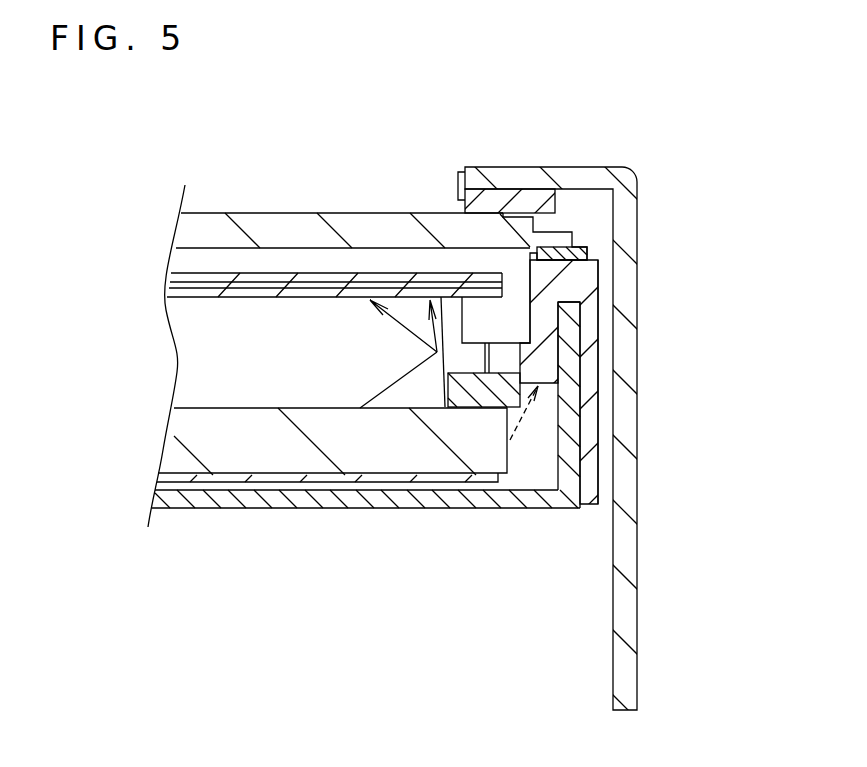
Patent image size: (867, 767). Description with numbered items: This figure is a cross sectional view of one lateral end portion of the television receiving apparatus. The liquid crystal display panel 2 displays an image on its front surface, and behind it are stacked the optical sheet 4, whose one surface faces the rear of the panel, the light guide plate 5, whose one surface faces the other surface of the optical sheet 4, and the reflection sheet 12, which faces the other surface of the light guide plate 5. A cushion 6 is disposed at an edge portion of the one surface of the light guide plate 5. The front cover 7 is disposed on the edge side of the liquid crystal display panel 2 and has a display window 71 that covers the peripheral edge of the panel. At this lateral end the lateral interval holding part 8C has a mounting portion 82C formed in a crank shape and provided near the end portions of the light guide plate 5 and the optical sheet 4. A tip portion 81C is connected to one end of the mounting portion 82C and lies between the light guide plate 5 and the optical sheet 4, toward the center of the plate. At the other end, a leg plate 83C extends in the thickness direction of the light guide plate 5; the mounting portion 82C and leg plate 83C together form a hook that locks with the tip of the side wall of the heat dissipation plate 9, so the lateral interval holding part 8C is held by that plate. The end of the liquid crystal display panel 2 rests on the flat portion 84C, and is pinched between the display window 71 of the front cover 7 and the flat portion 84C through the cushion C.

The liquid crystal display panel 2 is at (337, 213).
The optical sheet 4 is at (277, 272).
The light guide plate 5 is at (227, 460).
The cushion 6 is at (478, 397).
The front cover 7 is at (637, 556).
The display window 71 is at (457, 184).
The lateral interval holding part 8C is at (613, 324).
The tip portion 81C is at (443, 303).
The mounting portion 82C is at (540, 371).
The leg plate 83C is at (583, 512).
The flat portion 84C is at (573, 260).
The heat dissipation plate 9 is at (277, 510).
The reflection sheet 12 is at (335, 479).
The cushion C is at (557, 203).